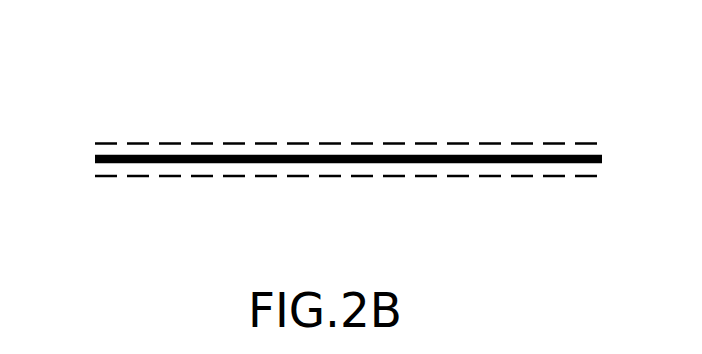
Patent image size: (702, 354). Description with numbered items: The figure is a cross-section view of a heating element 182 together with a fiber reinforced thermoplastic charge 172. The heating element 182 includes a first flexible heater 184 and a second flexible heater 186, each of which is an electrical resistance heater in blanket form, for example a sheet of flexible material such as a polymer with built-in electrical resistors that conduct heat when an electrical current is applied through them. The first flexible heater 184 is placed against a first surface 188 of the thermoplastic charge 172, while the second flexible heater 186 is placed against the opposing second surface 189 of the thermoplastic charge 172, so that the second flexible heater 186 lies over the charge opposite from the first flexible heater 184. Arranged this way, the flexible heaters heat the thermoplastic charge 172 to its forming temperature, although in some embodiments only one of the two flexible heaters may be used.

The heating element 182 is at (121, 104).
The thermoplastic charge 172 is at (570, 155).
The first flexible heater 184 is at (367, 143).
The second flexible heater 186 is at (417, 177).
The first surface 188 is at (252, 155).
The second surface 189 is at (530, 163).